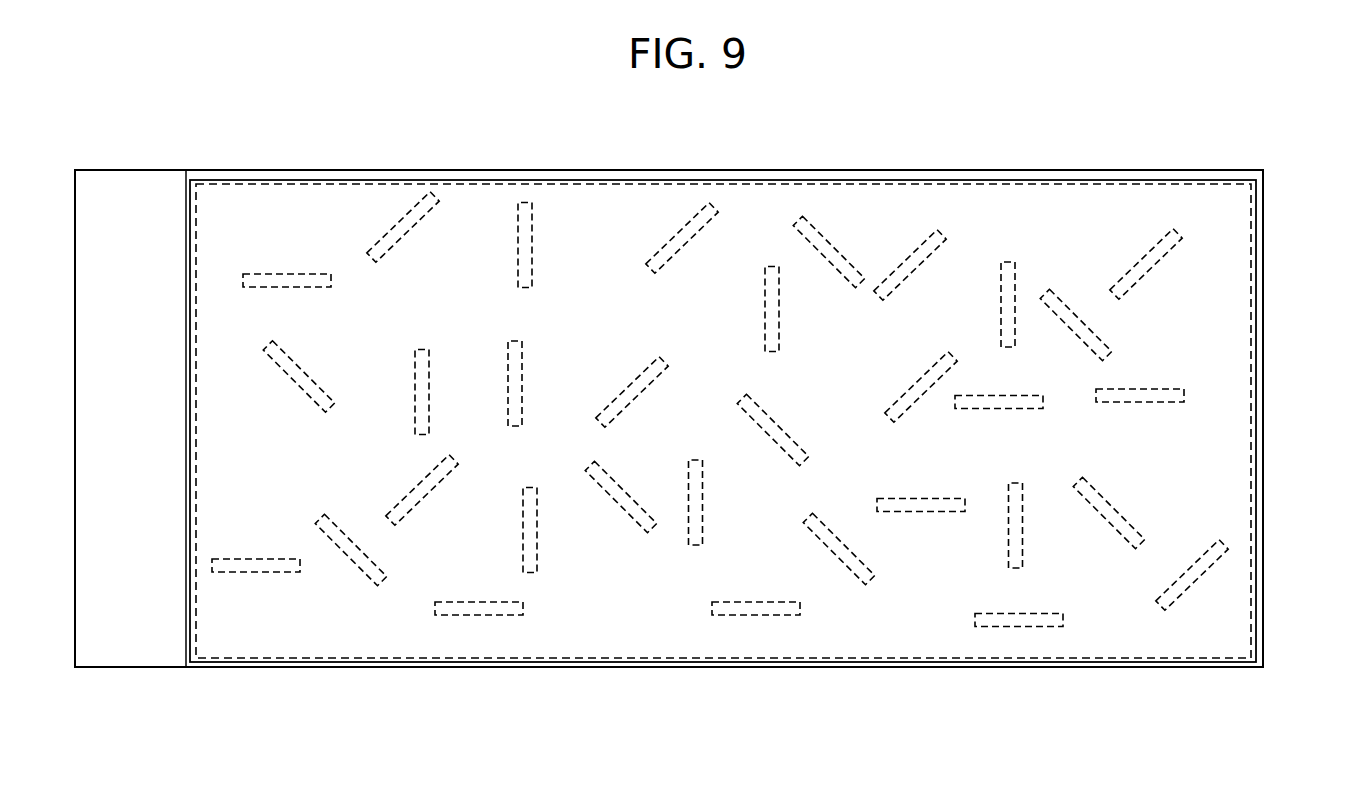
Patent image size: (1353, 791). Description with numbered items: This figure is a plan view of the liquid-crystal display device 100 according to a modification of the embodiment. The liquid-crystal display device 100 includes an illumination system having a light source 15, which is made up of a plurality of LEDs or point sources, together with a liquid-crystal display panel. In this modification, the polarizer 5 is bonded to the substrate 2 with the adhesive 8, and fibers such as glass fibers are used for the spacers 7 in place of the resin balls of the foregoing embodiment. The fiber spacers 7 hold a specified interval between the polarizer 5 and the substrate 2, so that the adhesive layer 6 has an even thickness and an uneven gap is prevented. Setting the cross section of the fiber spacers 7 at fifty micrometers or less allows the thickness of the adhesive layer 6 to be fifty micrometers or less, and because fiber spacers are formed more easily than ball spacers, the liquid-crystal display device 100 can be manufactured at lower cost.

The liquid-crystal display device 100 is at (709, 123).
The substrate 2 is at (1263, 533).
The polarizer 5 is at (1257, 265).
The adhesive layer 6 is at (1251, 380).
The spacers 7 is at (1181, 398).
The adhesive 8 is at (1212, 488).
The light source 15 is at (147, 650).